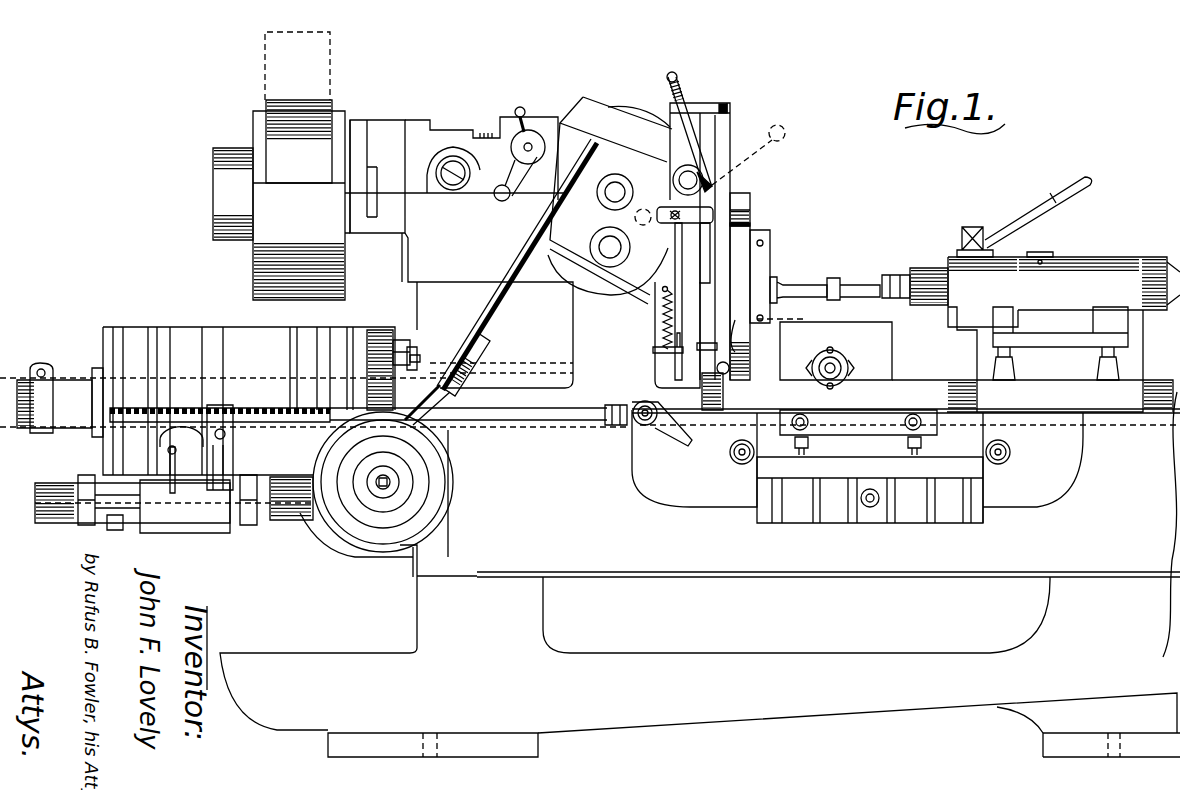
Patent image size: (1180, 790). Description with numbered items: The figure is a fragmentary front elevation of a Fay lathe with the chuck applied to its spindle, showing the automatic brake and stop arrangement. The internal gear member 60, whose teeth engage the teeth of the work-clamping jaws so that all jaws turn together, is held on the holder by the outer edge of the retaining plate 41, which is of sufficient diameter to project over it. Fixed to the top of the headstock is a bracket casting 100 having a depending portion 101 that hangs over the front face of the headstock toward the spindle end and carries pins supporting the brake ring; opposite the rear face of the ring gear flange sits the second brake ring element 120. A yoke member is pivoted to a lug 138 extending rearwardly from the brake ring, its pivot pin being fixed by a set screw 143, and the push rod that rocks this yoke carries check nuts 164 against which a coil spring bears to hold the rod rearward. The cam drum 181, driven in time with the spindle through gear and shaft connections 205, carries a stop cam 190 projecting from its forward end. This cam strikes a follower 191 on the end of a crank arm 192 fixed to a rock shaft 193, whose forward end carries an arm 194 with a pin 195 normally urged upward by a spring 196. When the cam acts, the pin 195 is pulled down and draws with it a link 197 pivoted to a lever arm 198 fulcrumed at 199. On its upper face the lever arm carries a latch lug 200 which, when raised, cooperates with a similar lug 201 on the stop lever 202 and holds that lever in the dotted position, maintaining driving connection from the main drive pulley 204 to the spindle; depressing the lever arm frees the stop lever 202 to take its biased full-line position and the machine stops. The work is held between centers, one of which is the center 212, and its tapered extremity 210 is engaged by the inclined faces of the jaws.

The retaining plate 41 is at (770, 250).
The internal gear member 60 is at (790, 265).
The bracket casting 100 is at (730, 108).
The depending portion 101 is at (717, 150).
The second brake ring element 120 is at (733, 352).
The lug 138 is at (752, 196).
The set screw 143 is at (723, 380).
The check nuts 164 is at (750, 222).
The cam drum 181 is at (233, 345).
The stop cam 190 is at (407, 342).
The follower 191 is at (410, 350).
The crank arm 192 is at (413, 360).
The rock shaft 193 is at (510, 370).
The arm 194 is at (693, 347).
The pin 195 is at (690, 355).
The spring 196 is at (662, 314).
The link 197 is at (677, 257).
The lever arm 198 is at (693, 219).
The fulcrum 199 is at (634, 217).
The latch lug 200 is at (670, 200).
The lug 201 is at (712, 187).
The stop lever 202 is at (677, 90).
The main drive pulley 204 is at (307, 153).
The gear and shaft connections 205 is at (523, 257).
The tapered extremity 210 is at (796, 313).
The center 212 is at (897, 277).